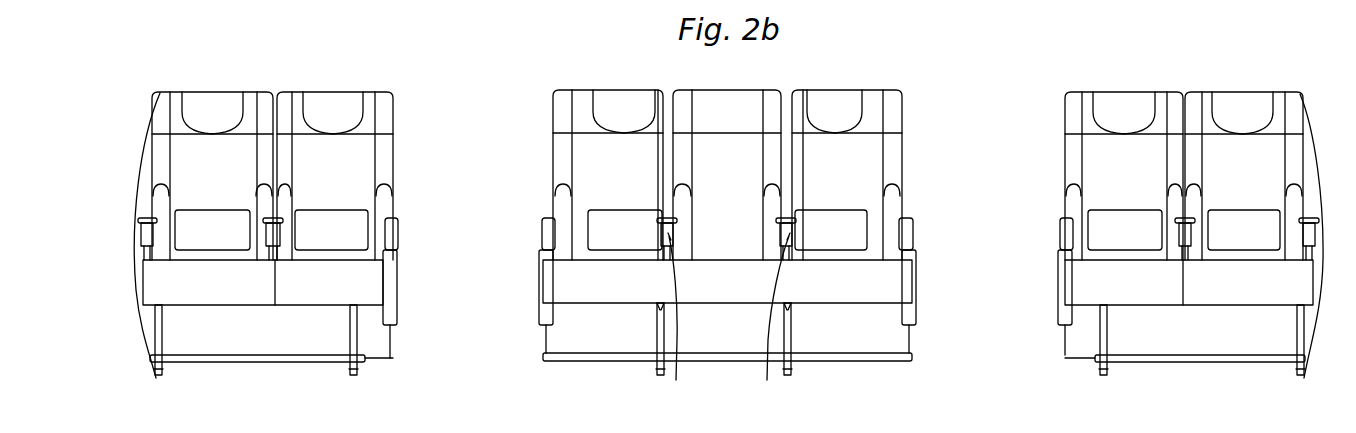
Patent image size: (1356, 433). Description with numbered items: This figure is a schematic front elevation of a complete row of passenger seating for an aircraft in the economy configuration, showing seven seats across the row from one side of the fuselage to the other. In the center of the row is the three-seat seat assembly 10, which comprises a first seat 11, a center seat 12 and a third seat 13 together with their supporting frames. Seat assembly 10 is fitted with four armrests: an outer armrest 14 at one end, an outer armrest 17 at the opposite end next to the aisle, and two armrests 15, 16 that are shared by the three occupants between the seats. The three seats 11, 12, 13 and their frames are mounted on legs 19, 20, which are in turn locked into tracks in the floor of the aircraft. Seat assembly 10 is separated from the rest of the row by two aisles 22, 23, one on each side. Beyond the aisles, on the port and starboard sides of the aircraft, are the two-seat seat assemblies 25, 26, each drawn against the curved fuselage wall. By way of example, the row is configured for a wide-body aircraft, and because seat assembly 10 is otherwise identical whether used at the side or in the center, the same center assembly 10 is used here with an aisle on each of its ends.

The seat assembly 10 is at (526, 86).
The window seat 11 is at (632, 182).
The center seat 12 is at (742, 184).
The aisle seat 13 is at (854, 182).
The armrest 14 is at (541, 246).
The armrest 15 is at (680, 317).
The armrest 16 is at (770, 318).
The armrest 17 is at (913, 247).
The leg 19 is at (654, 340).
The leg 20 is at (790, 336).
The aisle 22 is at (478, 224).
The aisle 23 is at (992, 230).
The seat assembly 25 is at (115, 246).
The seat assembly 26 is at (1326, 113).